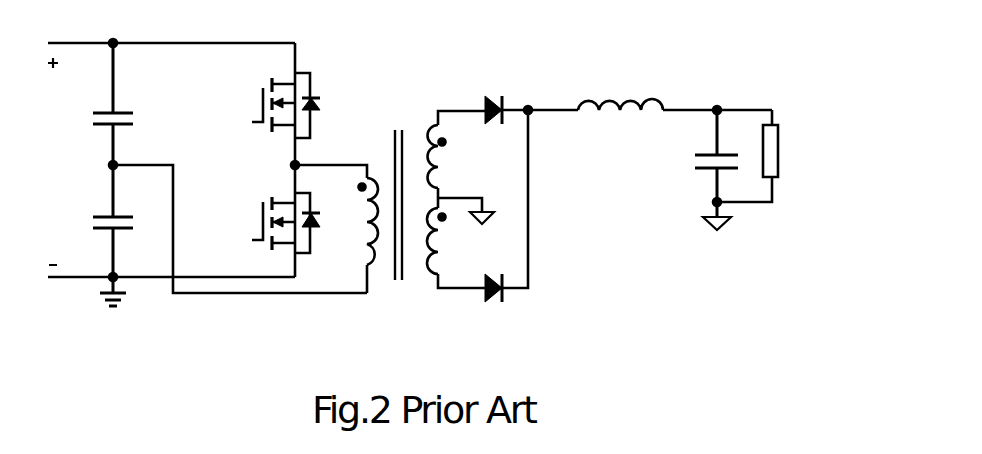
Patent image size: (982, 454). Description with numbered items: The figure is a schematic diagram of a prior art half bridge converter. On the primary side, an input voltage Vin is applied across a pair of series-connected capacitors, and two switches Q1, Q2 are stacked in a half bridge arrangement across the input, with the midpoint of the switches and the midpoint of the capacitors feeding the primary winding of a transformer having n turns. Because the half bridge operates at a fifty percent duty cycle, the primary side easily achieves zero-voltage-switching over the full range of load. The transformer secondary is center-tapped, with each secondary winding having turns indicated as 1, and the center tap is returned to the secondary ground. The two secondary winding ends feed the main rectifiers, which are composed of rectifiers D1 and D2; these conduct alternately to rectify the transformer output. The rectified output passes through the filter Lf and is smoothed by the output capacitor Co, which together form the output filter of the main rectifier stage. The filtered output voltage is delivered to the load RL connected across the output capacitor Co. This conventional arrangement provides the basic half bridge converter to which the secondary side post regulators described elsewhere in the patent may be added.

The input voltage Vin is at (164, 172).
The switch Q1 is at (268, 104).
The switch Q2 is at (268, 221).
The primary winding turns ratio n is at (336, 229).
The secondary winding turns 1 is at (460, 199).
The rectifier D1 is at (531, 134).
The rectifier D2 is at (505, 224).
The filter Lf is at (675, 123).
The output capacitor Co is at (705, 168).
The load RL is at (767, 168).